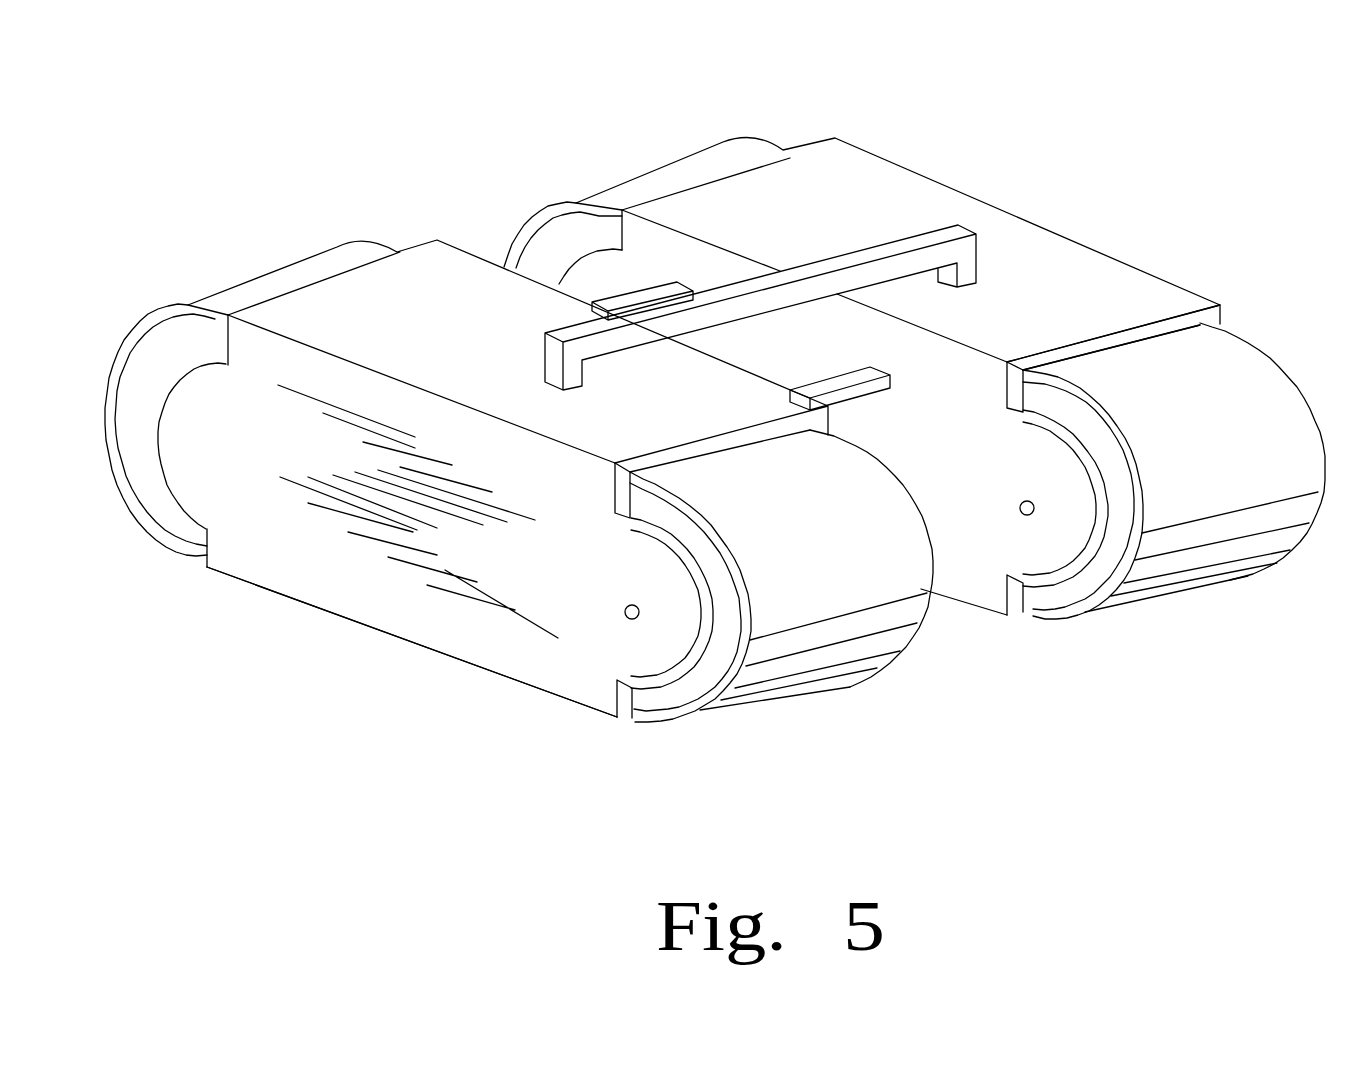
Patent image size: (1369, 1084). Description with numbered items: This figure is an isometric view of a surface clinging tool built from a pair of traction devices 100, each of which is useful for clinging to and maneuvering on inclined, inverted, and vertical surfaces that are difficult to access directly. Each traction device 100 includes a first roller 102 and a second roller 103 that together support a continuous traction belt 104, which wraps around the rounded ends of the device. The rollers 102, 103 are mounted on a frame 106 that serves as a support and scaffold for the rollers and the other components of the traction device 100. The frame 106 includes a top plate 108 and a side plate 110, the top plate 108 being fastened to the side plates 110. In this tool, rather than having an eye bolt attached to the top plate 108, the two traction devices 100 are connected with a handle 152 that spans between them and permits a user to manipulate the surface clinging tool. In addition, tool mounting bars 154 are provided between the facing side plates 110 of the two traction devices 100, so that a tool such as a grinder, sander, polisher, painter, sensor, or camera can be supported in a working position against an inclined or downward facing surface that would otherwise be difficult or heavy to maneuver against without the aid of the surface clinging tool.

The traction device 100 is at (691, 438).
The first roller 102 is at (680, 693).
The second roller 103 is at (147, 483).
The continuous traction belt 104 is at (691, 482).
The frame 106 is at (273, 590).
The top plate 108 is at (393, 283).
The side plate 110 is at (455, 628).
The handle 152 is at (818, 268).
The tool mounting bars 154 is at (641, 293).